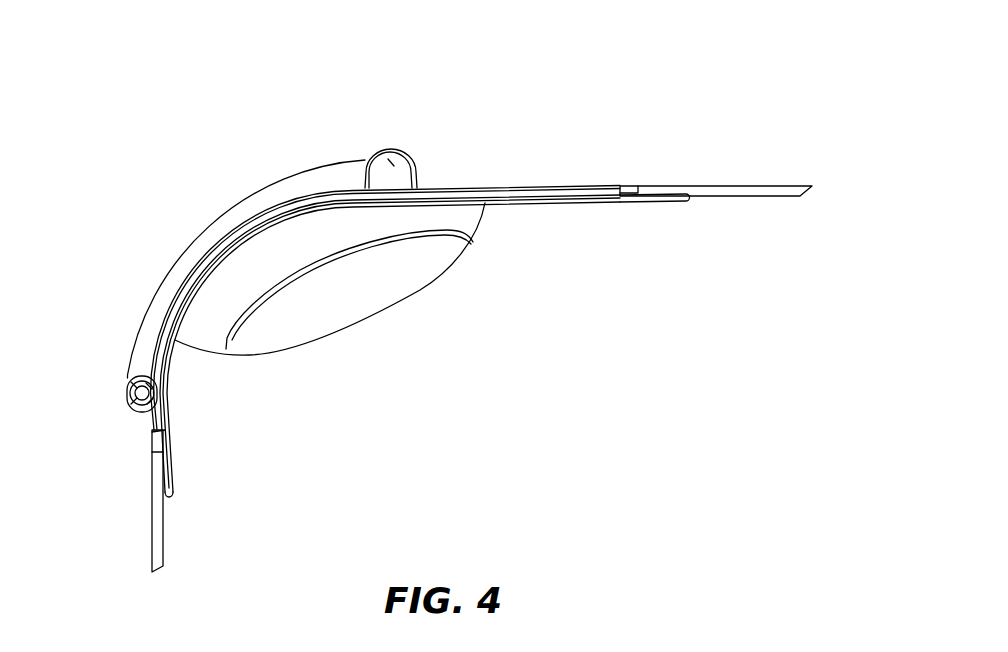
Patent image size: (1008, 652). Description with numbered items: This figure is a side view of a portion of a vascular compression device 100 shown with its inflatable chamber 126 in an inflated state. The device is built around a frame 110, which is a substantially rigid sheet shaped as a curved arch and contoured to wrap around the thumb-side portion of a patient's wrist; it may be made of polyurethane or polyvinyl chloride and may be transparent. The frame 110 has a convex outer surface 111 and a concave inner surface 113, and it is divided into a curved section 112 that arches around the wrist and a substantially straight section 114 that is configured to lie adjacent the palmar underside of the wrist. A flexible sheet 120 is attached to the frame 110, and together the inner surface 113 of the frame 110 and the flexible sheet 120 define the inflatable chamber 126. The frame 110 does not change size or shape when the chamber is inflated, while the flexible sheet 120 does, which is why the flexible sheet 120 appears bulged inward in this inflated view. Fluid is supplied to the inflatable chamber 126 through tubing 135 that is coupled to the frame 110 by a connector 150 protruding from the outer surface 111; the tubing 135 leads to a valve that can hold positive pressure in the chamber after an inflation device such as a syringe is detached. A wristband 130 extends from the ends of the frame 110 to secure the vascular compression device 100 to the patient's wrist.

The vascular compression device 100 is at (459, 323).
The frame 110 is at (303, 207).
The outer surface 111 is at (172, 313).
The curved section 112 is at (262, 222).
The inner surface 113 is at (540, 208).
The substantially straight section 114 is at (590, 205).
The flexible sheet 120 is at (290, 352).
The inflatable chamber 126 is at (364, 333).
The wristband 130 is at (752, 187).
The tubing 135 is at (225, 213).
The connector 150 is at (398, 167).